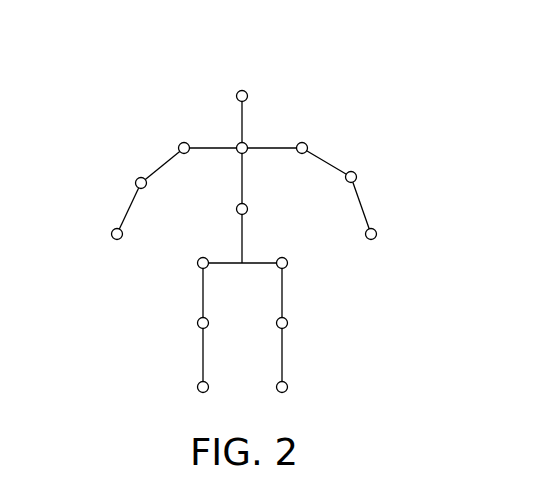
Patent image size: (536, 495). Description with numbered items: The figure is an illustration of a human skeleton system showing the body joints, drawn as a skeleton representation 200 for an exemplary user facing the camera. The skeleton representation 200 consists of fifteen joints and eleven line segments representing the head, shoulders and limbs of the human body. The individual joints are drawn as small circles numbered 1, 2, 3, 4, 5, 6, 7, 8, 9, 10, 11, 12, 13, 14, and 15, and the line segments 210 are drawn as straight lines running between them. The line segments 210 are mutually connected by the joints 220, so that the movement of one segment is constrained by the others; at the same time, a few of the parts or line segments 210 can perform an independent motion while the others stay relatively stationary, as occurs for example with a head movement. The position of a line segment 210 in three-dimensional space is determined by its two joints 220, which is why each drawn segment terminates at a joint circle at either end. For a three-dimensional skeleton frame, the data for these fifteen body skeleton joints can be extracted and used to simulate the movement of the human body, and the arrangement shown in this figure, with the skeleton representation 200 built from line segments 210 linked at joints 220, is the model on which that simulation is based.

The head joint 1 is at (252, 94).
The neck joint 2 is at (234, 135).
The left hand joint 3 is at (115, 251).
The left elbow joint 4 is at (147, 193).
The left shoulder joint 5 is at (188, 163).
The right shoulder joint 6 is at (300, 162).
The right elbow joint 7 is at (345, 189).
The right hand joint 8 is at (370, 250).
The torso joint 9 is at (252, 209).
The left hip joint 10 is at (215, 275).
The left knee joint 11 is at (215, 324).
The left foot joint 12 is at (216, 387).
The right hip joint 13 is at (268, 275).
The right knee joint 14 is at (269, 324).
The right foot joint 15 is at (269, 387).
The skeleton representation 200 is at (318, 94).
The line segments 210 is at (327, 161).
The joints 220 is at (387, 263).